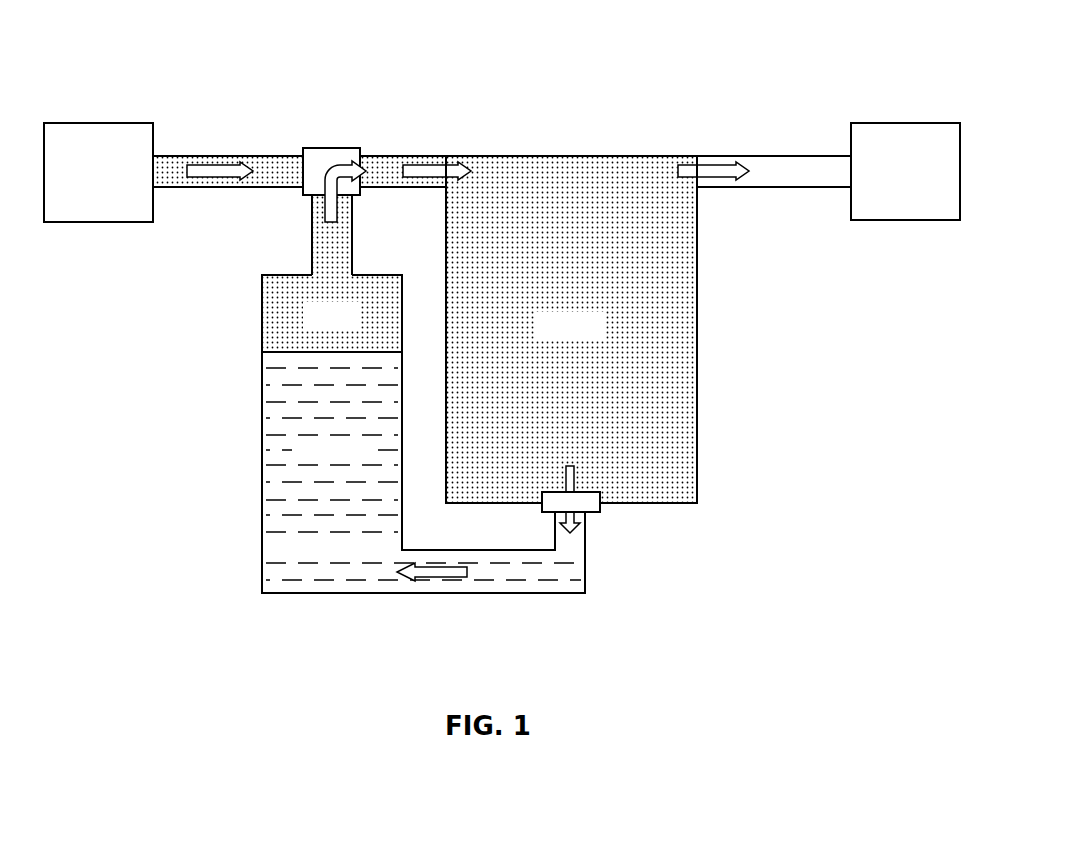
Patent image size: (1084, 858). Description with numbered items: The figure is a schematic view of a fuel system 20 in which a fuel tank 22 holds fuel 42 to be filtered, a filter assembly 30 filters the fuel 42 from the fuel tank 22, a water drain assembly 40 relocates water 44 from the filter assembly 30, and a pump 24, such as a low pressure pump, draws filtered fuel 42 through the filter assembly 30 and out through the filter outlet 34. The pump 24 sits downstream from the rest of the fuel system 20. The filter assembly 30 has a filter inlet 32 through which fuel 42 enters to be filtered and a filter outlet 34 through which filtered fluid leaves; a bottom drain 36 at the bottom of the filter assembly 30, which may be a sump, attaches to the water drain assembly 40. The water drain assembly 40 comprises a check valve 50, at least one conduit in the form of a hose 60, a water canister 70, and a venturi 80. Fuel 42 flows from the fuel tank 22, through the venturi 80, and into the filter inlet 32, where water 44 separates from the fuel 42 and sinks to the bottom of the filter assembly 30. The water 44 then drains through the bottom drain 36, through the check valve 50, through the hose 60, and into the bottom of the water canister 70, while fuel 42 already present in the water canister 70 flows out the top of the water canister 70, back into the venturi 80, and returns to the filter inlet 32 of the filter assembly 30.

The fuel system 20 is at (502, 334).
The fuel tank 22 is at (98, 122).
The pump 24 is at (905, 123).
The filter assembly 30 is at (706, 363).
The filter inlet 32 is at (445, 156).
The filter outlet 34 is at (698, 180).
The bottom drain 36 is at (587, 497).
The water drain assembly 40 is at (354, 471).
The fuel 42 is at (263, 313).
The water 44 is at (270, 407).
The check valve 50 is at (609, 520).
The hose 60 is at (216, 156).
The water canister 70 is at (318, 593).
The venturi 80 is at (303, 192).